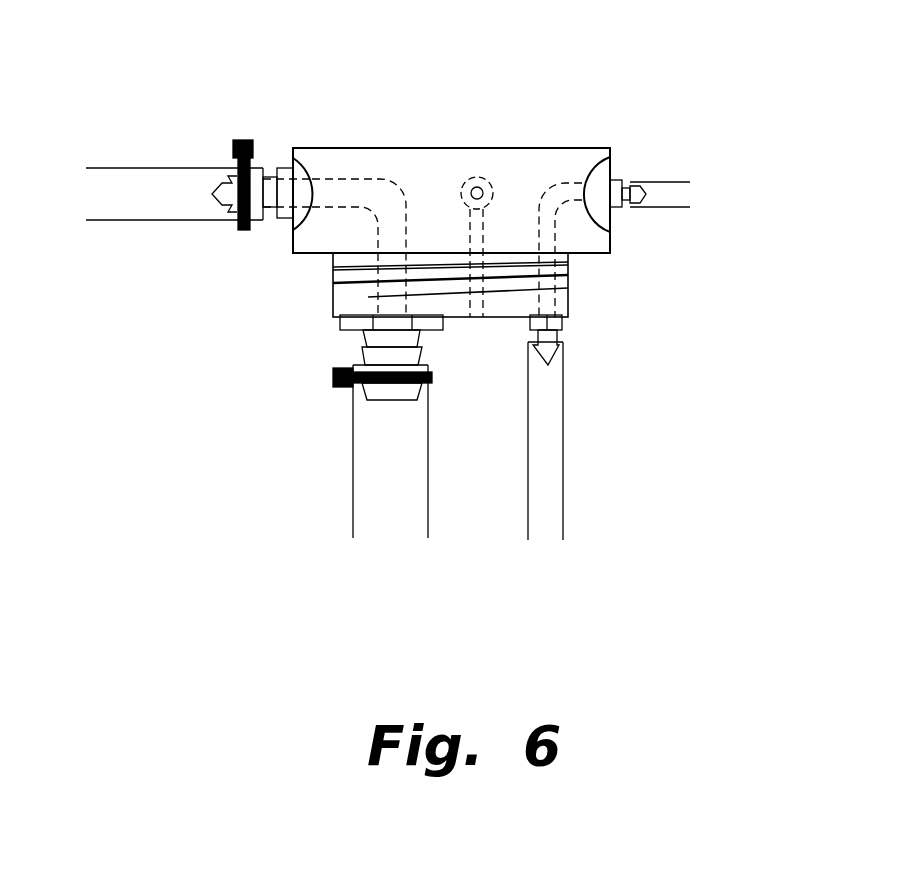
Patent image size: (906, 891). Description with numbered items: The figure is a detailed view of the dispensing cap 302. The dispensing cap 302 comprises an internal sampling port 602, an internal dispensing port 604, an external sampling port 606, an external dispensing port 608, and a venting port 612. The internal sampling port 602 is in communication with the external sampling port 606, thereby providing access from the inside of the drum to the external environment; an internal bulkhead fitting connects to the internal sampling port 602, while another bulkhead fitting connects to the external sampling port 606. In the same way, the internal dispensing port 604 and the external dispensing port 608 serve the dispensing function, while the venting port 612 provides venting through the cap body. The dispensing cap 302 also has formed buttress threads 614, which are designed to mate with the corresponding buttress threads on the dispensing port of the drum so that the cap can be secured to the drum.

The internal sampling port 602 is at (548, 300).
The internal dispensing port 604 is at (345, 322).
The external sampling port 606 is at (596, 188).
The external dispensing port 608 is at (303, 200).
The venting port 612 is at (478, 193).
The buttress threads 614 is at (568, 275).
The dispensing cap 302 is at (725, 537).